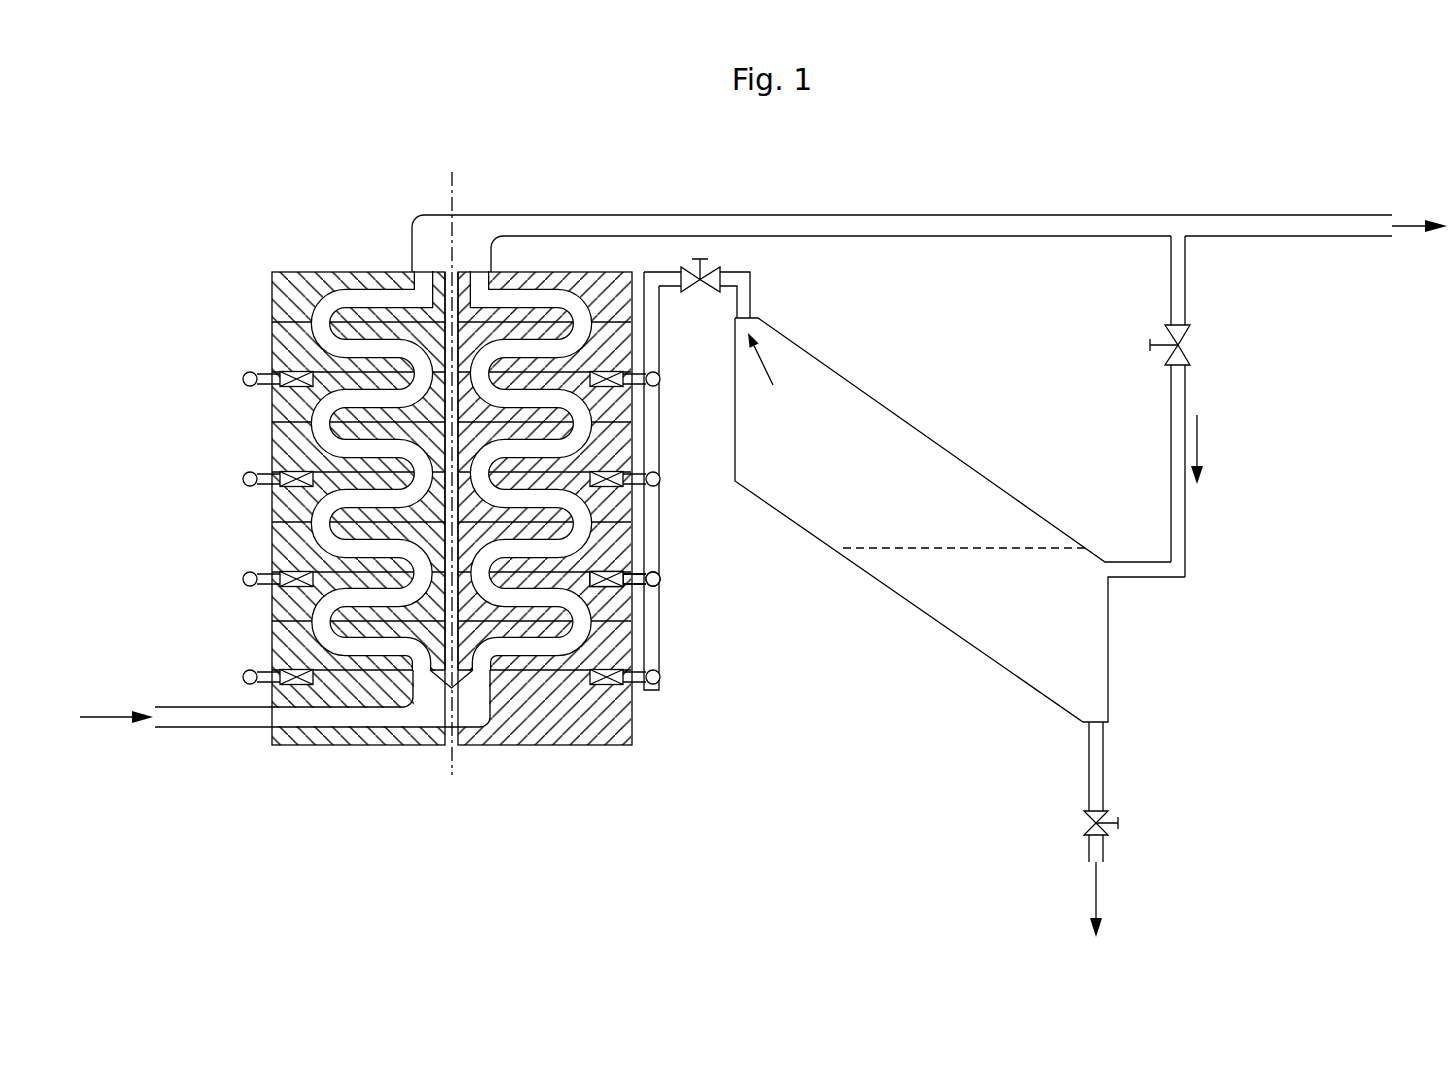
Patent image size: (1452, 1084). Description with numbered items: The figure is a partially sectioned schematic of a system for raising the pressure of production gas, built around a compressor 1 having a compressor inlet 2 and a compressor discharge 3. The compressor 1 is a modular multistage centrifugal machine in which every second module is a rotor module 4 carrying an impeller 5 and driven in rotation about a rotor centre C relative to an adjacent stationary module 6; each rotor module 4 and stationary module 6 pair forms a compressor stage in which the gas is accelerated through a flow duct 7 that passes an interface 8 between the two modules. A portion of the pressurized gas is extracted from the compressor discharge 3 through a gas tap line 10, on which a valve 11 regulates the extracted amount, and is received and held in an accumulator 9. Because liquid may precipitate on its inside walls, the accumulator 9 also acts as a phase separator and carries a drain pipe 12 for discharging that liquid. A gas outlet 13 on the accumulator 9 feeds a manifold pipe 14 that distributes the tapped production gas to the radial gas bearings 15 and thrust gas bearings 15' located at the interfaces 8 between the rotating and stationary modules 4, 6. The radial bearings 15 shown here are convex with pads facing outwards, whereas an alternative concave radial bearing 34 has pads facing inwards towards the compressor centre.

The compressor 1 is at (311, 262).
The compressor inlet 2 is at (184, 706).
The compressor discharge 3 is at (604, 214).
The rotor module 4 is at (285, 445).
The impeller 5 is at (383, 345).
The stationary module 6 is at (270, 404).
The flow duct 7 is at (318, 366).
The interface 8 is at (270, 418).
The accumulator 9 is at (932, 438).
The gas tap line 10 is at (1180, 285).
The valve 11 is at (1186, 342).
The drain pipe 12 is at (1105, 760).
The gas outlet 13 is at (752, 295).
The manifold pipe 14 is at (660, 430).
The radial gas bearing 15 is at (519, 528).
The thrust gas bearing 15' is at (625, 579).
The concave radial bearing 34 is at (625, 579).
The rotor centre C is at (455, 190).